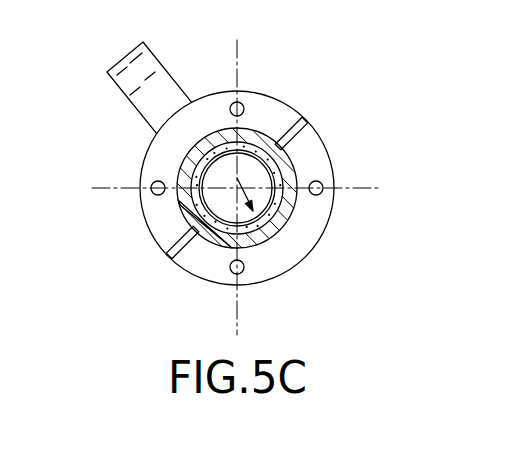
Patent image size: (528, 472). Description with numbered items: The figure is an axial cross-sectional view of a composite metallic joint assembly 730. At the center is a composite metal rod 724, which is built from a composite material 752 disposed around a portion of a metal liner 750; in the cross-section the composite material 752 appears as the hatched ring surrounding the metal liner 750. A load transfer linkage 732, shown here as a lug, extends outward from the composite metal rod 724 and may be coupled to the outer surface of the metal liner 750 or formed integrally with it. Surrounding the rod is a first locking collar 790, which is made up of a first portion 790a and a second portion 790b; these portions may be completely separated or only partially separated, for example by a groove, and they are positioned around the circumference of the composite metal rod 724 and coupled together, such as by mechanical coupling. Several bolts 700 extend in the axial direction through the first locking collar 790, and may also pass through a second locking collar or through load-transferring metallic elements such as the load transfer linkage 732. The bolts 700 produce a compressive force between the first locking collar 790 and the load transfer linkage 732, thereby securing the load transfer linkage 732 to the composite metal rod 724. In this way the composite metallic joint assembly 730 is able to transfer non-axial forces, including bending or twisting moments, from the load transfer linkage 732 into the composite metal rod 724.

The bolts 700 is at (245, 110).
The composite metal rod 724 is at (271, 242).
The composite metallic joint assembly 730 is at (400, 121).
The load transfer linkage 732 is at (142, 101).
The metal liner 750 is at (304, 118).
The composite material 752 is at (290, 163).
The first locking collar 790 is at (318, 223).
The first portion 790a is at (150, 218).
The second portion 790b is at (190, 265).